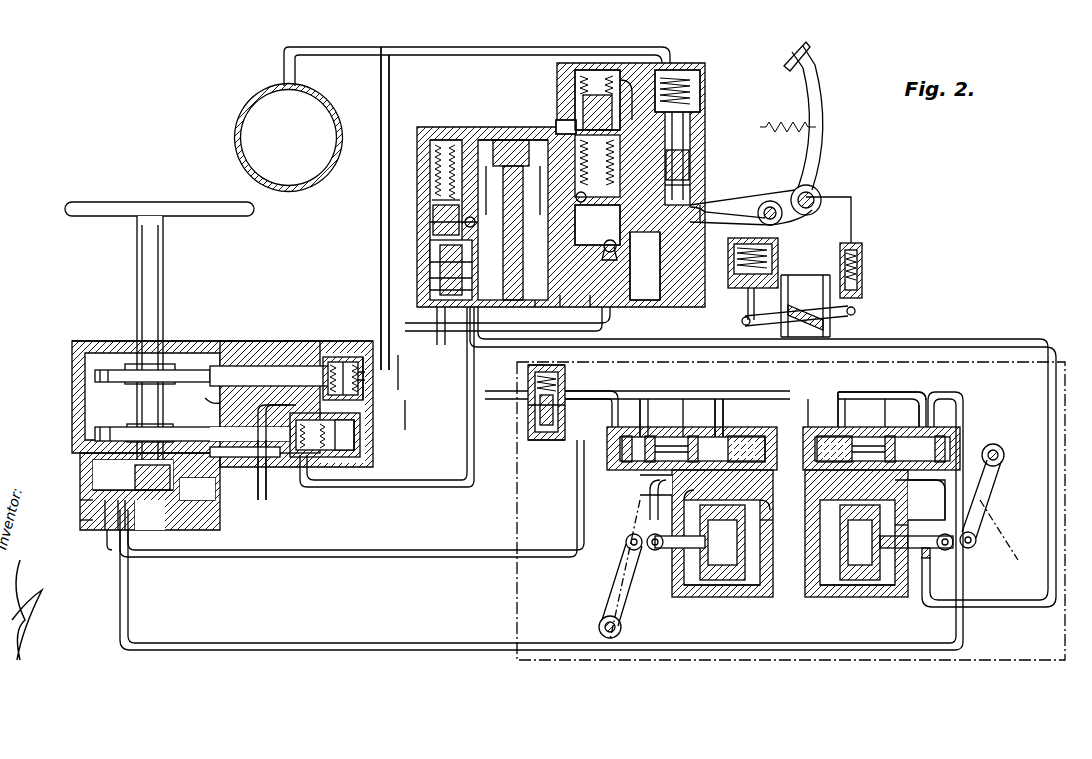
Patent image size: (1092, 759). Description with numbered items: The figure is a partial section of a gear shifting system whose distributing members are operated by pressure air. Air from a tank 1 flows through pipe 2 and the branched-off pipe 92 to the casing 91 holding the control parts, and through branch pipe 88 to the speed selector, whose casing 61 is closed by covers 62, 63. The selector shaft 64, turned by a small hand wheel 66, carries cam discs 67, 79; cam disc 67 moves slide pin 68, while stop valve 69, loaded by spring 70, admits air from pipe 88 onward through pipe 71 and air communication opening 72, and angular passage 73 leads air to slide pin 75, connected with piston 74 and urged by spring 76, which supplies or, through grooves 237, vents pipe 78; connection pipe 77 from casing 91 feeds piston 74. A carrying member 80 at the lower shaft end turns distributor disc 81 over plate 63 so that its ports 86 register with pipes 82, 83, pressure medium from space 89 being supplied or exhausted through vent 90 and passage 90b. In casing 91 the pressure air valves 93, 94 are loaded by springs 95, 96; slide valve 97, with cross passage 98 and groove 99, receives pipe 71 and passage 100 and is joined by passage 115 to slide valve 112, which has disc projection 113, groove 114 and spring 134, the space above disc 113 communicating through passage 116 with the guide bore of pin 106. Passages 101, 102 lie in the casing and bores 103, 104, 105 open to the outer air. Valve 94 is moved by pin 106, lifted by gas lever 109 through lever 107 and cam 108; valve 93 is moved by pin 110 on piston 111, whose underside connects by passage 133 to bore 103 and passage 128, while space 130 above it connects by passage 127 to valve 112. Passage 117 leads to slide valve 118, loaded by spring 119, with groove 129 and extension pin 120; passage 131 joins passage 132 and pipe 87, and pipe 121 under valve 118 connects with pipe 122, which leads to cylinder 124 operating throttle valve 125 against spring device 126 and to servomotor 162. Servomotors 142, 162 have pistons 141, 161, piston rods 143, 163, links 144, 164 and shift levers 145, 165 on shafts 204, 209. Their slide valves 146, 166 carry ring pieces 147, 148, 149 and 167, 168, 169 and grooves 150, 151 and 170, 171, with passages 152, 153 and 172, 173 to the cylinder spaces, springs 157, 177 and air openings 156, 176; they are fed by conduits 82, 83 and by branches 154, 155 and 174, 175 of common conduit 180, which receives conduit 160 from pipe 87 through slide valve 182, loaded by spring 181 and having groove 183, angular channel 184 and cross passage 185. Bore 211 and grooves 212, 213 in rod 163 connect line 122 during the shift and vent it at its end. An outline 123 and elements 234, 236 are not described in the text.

The fluid reservoir 1 is at (240, 131).
The pipe 2 is at (381, 195).
The casing 61 is at (75, 405).
The cover 62 is at (113, 343).
The cover 63 is at (80, 518).
The shaft 64 is at (166, 338).
The hand wheel 66 is at (120, 202).
The cam disc 67 is at (107, 384).
The slide pin 68 is at (250, 360).
The stop valve 69 is at (340, 357).
The spring 70 is at (356, 357).
The pipe 71 is at (611, 322).
The air communication opening 72 is at (290, 370).
The angular passage 73 is at (365, 396).
The piston 74 is at (340, 457).
The slide pin 75 is at (247, 460).
The spring 76 is at (292, 457).
The connection pipe 77 is at (406, 425).
The pipe 78 is at (262, 500).
The cam disc 79 is at (190, 427).
The carrying member 80 is at (135, 478).
The rotary valve distributor disc 81 is at (88, 500).
The pipe 82 is at (116, 550).
The pipe 83 is at (128, 610).
The port 86 is at (93, 490).
The pipe 87 is at (423, 488).
The branch pipe 88 is at (400, 380).
The space 89 is at (90, 465).
The vent opening 90 is at (143, 562).
The passage 90b is at (165, 556).
The casing 91 is at (630, 310).
The pipe 92 is at (441, 47).
The pressure air valve 93 is at (562, 307).
The pressure air valve 94 is at (428, 142).
The spring 95 is at (536, 307).
The spring 96 is at (700, 95).
The slide valve 97 is at (640, 300).
The cross passage 98 is at (640, 288).
The groove 99 is at (640, 270).
The passage 100 is at (592, 307).
The passage 101 is at (597, 225).
The passage 102 is at (625, 252).
The bore 103 is at (430, 222).
The bore 104 is at (586, 199).
The bore 105 is at (690, 140).
The pin 106 is at (690, 160).
The lever 107 is at (712, 224).
The cam 108 is at (806, 215).
The gas lever 109 is at (820, 160).
The pin 110 is at (520, 160).
The piston 111 is at (498, 160).
The slide valve 112 is at (602, 95).
The disc shaped projection 113 is at (600, 76).
The groove 114 is at (633, 85).
The passage 115 is at (703, 205).
The passage 116 is at (700, 78).
The passage 117 is at (433, 208).
The slide valve 118 is at (430, 165).
The spring 119 is at (442, 140).
The extension pin 120 is at (430, 278).
The pipe 121 is at (455, 345).
The pipe 122 is at (948, 347).
The vehicle frame outline 123 is at (517, 580).
The cylinder 124 is at (728, 258).
The throttle valve 125 is at (828, 322).
The spring device 126 is at (862, 265).
The communication passage 127 is at (560, 118).
The passage 128 is at (510, 140).
The groove 129 is at (440, 248).
The space 130 is at (566, 127).
The communication passage 131 is at (430, 262).
The passage 132 is at (430, 290).
The passage 133 is at (465, 220).
The spring 134 is at (690, 180).
The piston 141 is at (748, 592).
The gear shifting servomotor 142 is at (695, 597).
The piston rod 143 is at (722, 542).
The link 144 is at (652, 552).
The shift lever 145 is at (618, 585).
The slide valve 146 is at (627, 436).
The ring piece 147 is at (652, 436).
The ring piece 148 is at (718, 436).
The ring piece 149 is at (750, 436).
The groove 150 is at (650, 484).
The groove 151 is at (745, 427).
The passage 152 is at (650, 500).
The passage 153 is at (765, 500).
The conduit branch 154 is at (640, 399).
The conduit branch 155 is at (716, 399).
The air communication opening 156 is at (683, 399).
The spring 157 is at (768, 455).
The conduit 160 is at (528, 395).
The piston 161 is at (830, 592).
The gear shifting servomotor 162 is at (890, 592).
The piston rod 163 is at (863, 542).
The link 164 is at (950, 550).
The shift lever 165 is at (976, 541).
The slide valve 166 is at (950, 440).
The ring piece 167 is at (928, 437).
The ring piece 168 is at (893, 437).
The ring piece 169 is at (832, 437).
The groove 170 is at (930, 420).
The groove 171 is at (870, 437).
The passage 172 is at (910, 488).
The passage 173 is at (762, 492).
The conduit branch 174 is at (845, 399).
The conduit branch 175 is at (920, 399).
The air communication opening 176 is at (885, 399).
The spring 177 is at (808, 399).
The common conduit 180 is at (592, 391).
The spring 181 is at (528, 370).
The slide valve 182 is at (547, 440).
The groove 183 is at (565, 410).
The angular channel 184 is at (528, 405).
The cross passage 185 is at (530, 428).
The shaft 204 is at (598, 627).
The shaft 209 is at (996, 446).
The bore 211 is at (896, 524).
The longitudinal groove 212 is at (890, 536).
The longitudinal groove 213 is at (920, 600).
The passage 234 is at (199, 396).
The pipe 236 is at (292, 517).
The grooves 237 is at (275, 497).